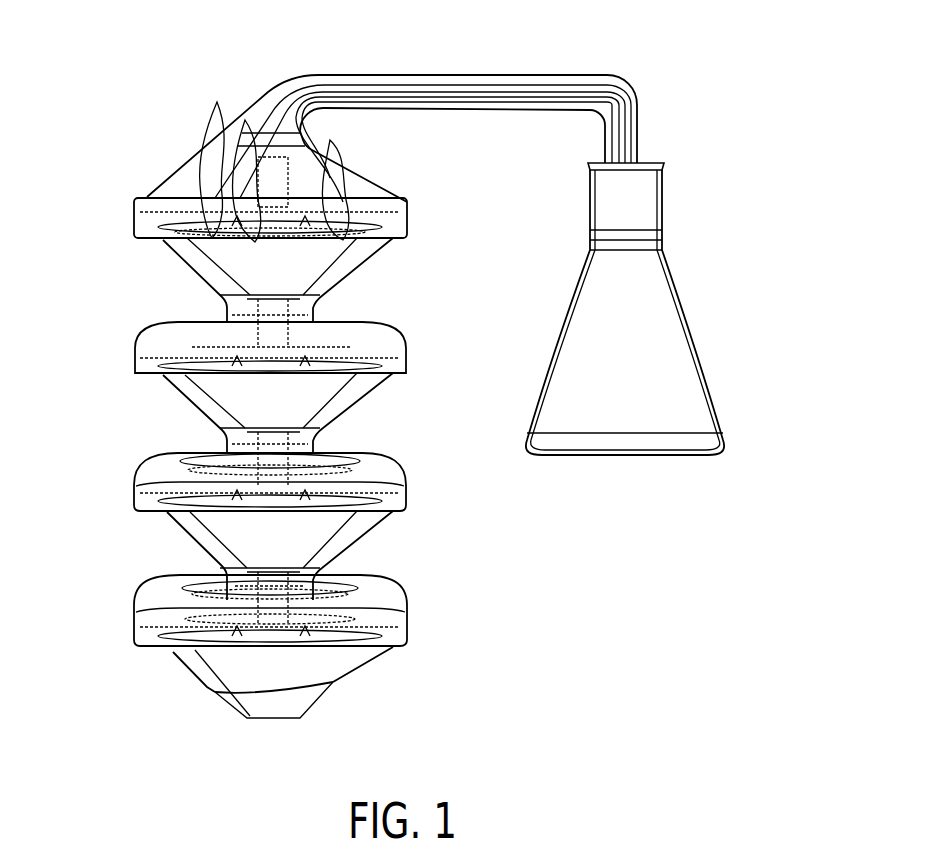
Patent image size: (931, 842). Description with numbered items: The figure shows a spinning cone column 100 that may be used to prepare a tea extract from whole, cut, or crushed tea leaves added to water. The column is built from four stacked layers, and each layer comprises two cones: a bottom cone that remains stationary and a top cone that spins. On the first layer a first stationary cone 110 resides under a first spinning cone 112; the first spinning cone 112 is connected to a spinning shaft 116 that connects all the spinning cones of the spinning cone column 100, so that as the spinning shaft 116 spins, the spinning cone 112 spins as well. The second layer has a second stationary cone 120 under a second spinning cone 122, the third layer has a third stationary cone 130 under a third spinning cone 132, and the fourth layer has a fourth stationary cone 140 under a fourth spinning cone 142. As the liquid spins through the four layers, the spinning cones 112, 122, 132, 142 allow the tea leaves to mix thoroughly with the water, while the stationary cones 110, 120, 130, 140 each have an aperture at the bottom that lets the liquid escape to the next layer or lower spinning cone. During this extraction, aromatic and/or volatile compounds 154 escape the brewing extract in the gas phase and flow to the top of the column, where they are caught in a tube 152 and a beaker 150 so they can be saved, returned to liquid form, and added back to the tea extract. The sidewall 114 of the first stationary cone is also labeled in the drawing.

The spinning cone column 100 is at (140, 74).
The first stationary cone 110 is at (203, 668).
The first spinning cone 112 is at (217, 647).
The conical sidewall of first tray 114 is at (362, 615).
The spinning shaft 116 is at (280, 587).
The second stationary cone 120 is at (195, 535).
The second spinning cone 122 is at (207, 492).
The third stationary cone 130 is at (197, 392).
The third spinning cone 132 is at (207, 363).
The fourth stationary cone 140 is at (192, 260).
The fourth spinning cone 142 is at (185, 212).
The beaker 150 is at (665, 350).
The tube 152 is at (562, 88).
The aromatic and/or volatile compounds 154 is at (278, 172).